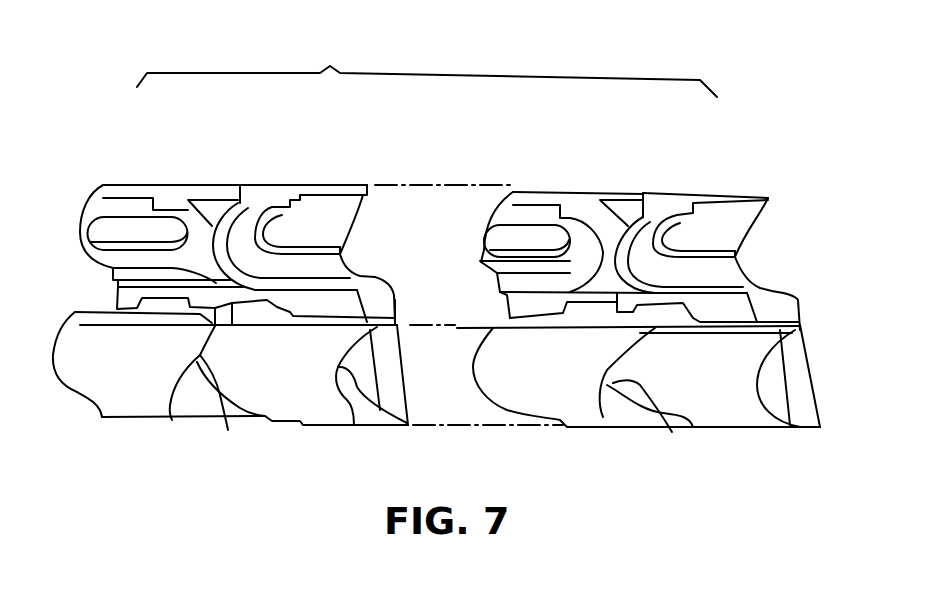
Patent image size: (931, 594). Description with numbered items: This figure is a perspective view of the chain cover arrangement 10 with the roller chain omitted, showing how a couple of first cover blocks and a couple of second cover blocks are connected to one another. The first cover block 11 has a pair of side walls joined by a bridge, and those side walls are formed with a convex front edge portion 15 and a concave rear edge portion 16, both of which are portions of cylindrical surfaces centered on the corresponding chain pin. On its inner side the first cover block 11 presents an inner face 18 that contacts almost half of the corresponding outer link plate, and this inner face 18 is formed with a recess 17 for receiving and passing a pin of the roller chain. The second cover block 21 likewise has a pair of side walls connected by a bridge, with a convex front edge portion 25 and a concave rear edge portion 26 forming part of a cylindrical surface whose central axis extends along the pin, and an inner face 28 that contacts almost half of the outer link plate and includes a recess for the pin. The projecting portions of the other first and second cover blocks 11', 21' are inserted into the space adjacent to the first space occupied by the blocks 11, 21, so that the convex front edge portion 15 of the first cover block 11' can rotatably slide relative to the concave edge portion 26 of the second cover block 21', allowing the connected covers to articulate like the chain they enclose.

The chain cover arrangement 10 is at (427, 66).
The first cover block 11 is at (285, 202).
The first cover block 11' is at (691, 206).
The convex front edge portion 15 is at (228, 430).
The concave rear edge portion 16 is at (354, 425).
The recess 17 is at (338, 227).
The inner face 18 is at (320, 282).
The second cover block 21 is at (237, 220).
The second cover block 21' is at (639, 221).
The convex front edge portion 25 is at (44, 378).
The concave rear edge portion 26 is at (172, 420).
The inner face 28 is at (537, 282).